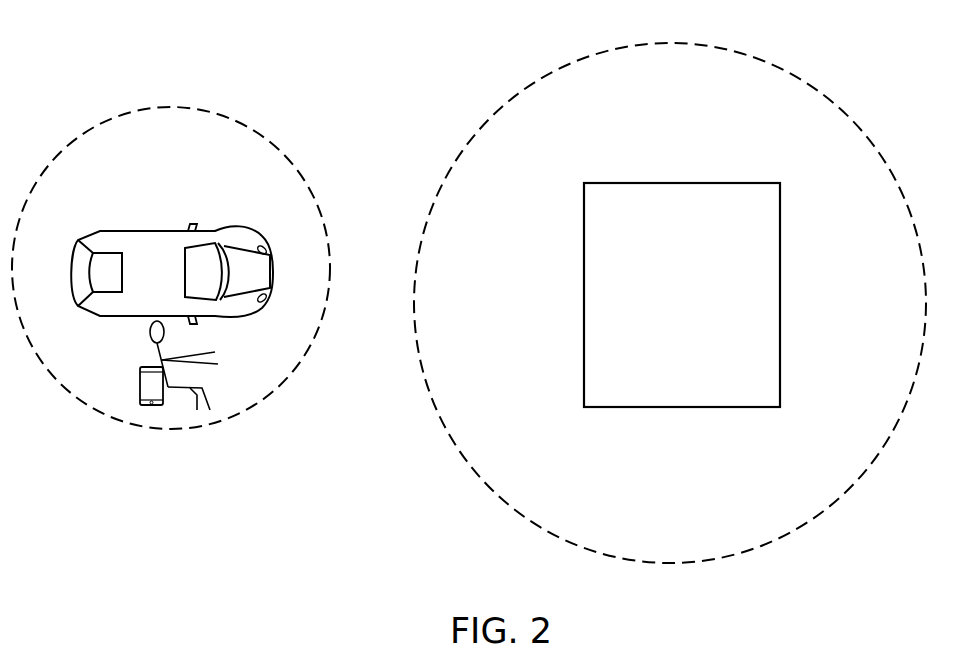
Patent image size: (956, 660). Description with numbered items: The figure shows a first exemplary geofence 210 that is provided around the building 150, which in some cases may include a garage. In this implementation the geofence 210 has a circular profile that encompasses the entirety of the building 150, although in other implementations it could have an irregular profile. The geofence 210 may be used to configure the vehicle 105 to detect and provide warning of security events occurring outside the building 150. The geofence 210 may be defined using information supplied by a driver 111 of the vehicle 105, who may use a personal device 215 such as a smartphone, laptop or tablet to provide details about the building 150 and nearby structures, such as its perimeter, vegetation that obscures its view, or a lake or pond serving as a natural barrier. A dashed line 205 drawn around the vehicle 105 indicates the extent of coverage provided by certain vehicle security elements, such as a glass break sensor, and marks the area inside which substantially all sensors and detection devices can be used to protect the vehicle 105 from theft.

The vehicle 105 is at (92, 222).
The driver 111 is at (143, 343).
The building 150 is at (697, 302).
The dashed line 205 is at (174, 106).
The geofence 210 is at (712, 43).
The personal device 215 is at (135, 378).